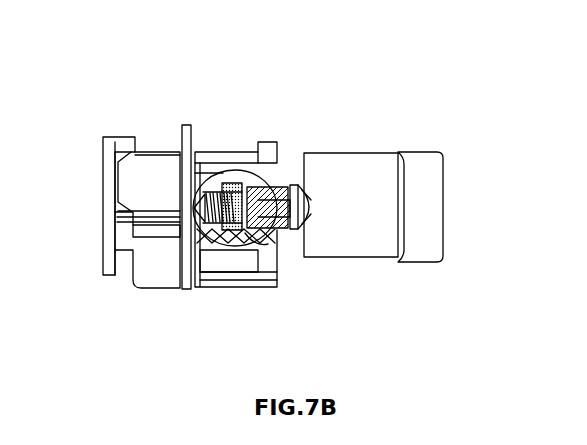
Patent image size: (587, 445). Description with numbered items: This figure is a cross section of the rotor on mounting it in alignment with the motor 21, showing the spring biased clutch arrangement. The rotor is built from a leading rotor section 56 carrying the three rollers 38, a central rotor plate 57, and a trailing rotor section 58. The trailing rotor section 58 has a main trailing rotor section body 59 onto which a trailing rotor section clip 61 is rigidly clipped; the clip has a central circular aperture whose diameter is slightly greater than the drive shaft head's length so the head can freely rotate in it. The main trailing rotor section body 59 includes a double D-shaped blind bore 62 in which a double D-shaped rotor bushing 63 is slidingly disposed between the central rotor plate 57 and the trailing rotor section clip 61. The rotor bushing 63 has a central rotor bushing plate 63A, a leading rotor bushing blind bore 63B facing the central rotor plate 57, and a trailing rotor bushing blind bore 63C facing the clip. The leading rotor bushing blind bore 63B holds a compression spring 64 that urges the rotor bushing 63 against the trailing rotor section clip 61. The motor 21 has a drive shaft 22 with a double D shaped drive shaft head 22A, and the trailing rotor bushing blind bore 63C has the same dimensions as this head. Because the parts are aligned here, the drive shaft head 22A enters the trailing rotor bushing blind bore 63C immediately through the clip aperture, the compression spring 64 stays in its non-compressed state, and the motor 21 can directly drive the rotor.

The motor 21 is at (424, 152).
The drive shaft 22 is at (283, 233).
The drive shaft head 22A is at (289, 183).
The rollers 38 is at (155, 151).
The leading rotor section 56 is at (108, 153).
The central rotor plate 57 is at (183, 126).
The trailing rotor section 58 is at (227, 260).
The main trailing rotor section body 59 is at (231, 168).
The trailing rotor section clip 61 is at (266, 147).
The double D-shaped blind bore 62 is at (215, 246).
The rotor bushing 63 is at (258, 247).
The central rotor bushing plate 63A is at (243, 228).
The leading rotor bushing blind bore 63B is at (223, 183).
The trailing rotor bushing blind bore 63C is at (273, 178).
The compression spring 64 is at (205, 218).